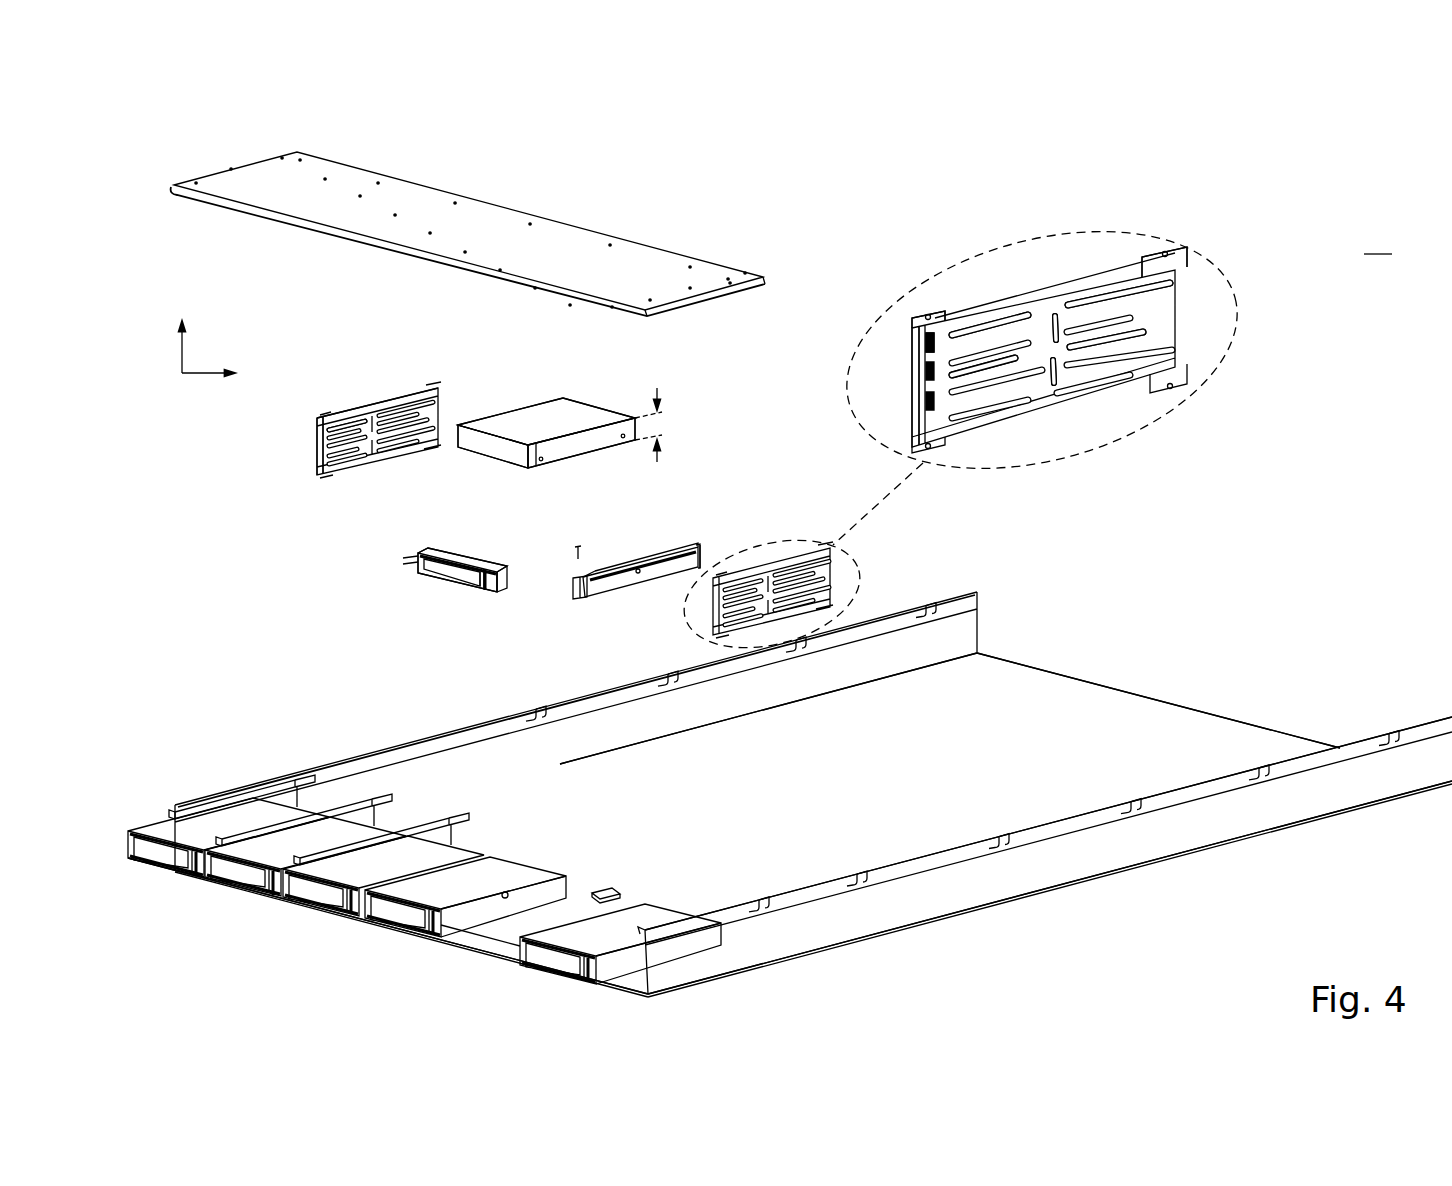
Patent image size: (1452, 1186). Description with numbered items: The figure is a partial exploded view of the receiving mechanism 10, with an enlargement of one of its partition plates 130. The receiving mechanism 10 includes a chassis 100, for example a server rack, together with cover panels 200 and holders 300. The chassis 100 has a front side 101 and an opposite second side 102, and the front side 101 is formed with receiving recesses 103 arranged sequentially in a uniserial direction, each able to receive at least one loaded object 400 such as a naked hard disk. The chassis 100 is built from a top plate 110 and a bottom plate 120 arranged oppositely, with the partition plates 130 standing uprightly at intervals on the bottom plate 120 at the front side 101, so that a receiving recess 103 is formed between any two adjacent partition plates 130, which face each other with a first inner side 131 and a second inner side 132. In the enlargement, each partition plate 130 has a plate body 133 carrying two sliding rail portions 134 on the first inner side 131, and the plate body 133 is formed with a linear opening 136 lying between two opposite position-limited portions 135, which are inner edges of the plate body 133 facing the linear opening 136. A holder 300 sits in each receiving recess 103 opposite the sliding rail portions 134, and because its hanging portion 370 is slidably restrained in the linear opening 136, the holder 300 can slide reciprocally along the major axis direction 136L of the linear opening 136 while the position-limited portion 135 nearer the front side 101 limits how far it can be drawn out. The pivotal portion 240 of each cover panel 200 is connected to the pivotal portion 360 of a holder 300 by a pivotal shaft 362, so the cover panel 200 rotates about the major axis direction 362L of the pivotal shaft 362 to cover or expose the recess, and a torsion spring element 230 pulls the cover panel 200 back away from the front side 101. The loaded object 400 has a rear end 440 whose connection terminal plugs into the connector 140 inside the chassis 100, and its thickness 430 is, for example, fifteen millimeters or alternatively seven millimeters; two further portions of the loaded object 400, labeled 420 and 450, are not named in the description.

The receiving mechanism 10 is at (1378, 239).
The chassis 100 is at (978, 598).
The front side 101 is at (499, 939).
The second side 102 is at (1160, 691).
The receiving recesses 103 is at (556, 861).
The top plate 110 is at (263, 176).
The bottom plate 120 is at (1032, 685).
The partition plates 130 is at (440, 388).
The first inner side 131 is at (327, 478).
The second inner side 132 is at (918, 390).
The plate body 133 is at (356, 406).
The sliding rail portions 134 is at (398, 438).
The position-limited portions 135 is at (1052, 320).
The linear opening 136 is at (979, 340).
The major axis direction 136L is at (198, 374).
The connector 140 is at (614, 886).
The cover panels 200 is at (457, 573).
The torsion spring element 230 is at (504, 582).
The pivotal portion 240 is at (505, 589).
The holders 300 is at (613, 568).
The pivotal portion 360 is at (584, 598).
The pivotal shaft 362 is at (578, 551).
The major axis direction 362L is at (179, 350).
The hanging portion 370 is at (695, 545).
The loaded object 400 is at (592, 410).
The front surface 420 is at (560, 455).
The thickness 430 is at (660, 423).
The rear end 440 is at (563, 397).
The side surface 450 is at (487, 450).